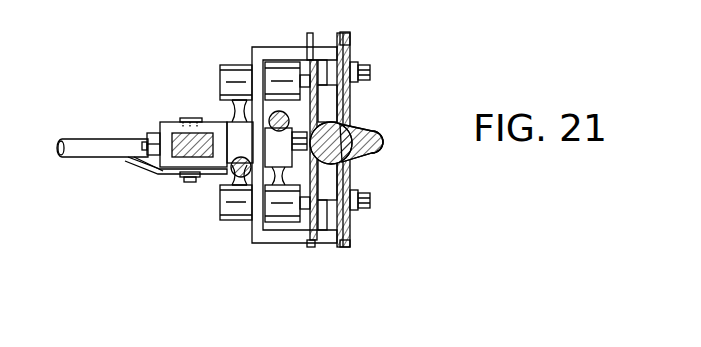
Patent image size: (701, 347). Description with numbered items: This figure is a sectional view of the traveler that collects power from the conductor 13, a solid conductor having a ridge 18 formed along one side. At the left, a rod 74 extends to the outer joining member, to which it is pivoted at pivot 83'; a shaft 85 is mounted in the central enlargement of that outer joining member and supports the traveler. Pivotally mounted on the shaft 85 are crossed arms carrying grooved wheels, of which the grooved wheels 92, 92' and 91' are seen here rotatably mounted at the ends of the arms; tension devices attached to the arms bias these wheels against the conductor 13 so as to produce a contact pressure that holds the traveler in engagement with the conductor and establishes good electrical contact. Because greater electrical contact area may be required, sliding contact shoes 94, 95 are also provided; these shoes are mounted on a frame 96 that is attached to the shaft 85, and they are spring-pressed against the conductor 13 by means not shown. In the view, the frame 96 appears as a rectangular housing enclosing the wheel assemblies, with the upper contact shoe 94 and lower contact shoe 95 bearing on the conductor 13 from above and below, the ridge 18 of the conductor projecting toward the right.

The rod 74 is at (90, 147).
The shaft 85 is at (157, 133).
The pivot 83' is at (164, 202).
The frame 96 is at (278, 47).
The grooved wheel 92' is at (374, 75).
The grooved wheel 91' is at (382, 195).
The sliding contact shoe 94 is at (326, 116).
The sliding contact shoe 95 is at (333, 177).
The conductor 13 is at (360, 125).
The ridge 18 is at (382, 144).
The grooved wheel 92 is at (543, 16).